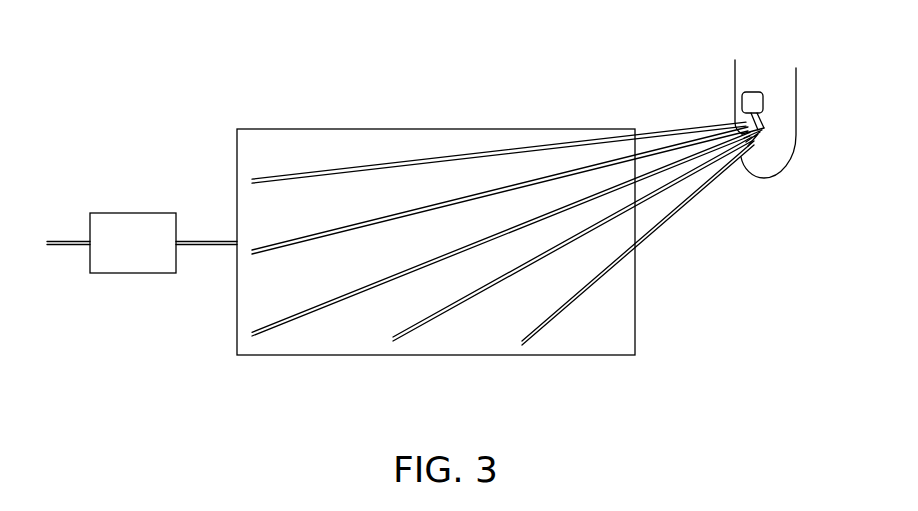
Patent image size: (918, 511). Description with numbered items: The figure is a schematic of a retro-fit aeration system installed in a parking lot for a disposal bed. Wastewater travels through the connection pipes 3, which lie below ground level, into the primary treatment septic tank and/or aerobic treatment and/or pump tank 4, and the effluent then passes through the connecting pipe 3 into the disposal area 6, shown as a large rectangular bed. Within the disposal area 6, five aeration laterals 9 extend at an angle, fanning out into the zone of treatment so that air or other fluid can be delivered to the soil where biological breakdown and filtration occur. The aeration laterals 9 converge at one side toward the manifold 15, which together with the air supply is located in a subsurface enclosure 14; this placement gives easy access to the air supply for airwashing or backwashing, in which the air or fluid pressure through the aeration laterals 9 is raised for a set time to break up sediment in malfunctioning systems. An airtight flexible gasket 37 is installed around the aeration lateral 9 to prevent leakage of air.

The connection pipes 3 is at (73, 245).
The tank 4 is at (133, 273).
The disposal area 6 is at (328, 129).
The aeration lateral 9 is at (272, 184).
The subsurface enclosure 14 is at (750, 92).
The manifold 15 is at (760, 132).
The flexible gasket 37 is at (741, 157).